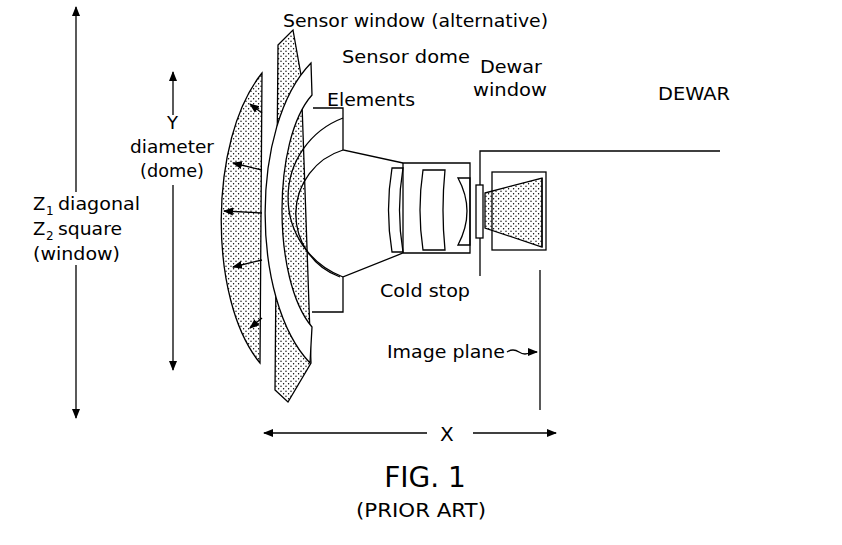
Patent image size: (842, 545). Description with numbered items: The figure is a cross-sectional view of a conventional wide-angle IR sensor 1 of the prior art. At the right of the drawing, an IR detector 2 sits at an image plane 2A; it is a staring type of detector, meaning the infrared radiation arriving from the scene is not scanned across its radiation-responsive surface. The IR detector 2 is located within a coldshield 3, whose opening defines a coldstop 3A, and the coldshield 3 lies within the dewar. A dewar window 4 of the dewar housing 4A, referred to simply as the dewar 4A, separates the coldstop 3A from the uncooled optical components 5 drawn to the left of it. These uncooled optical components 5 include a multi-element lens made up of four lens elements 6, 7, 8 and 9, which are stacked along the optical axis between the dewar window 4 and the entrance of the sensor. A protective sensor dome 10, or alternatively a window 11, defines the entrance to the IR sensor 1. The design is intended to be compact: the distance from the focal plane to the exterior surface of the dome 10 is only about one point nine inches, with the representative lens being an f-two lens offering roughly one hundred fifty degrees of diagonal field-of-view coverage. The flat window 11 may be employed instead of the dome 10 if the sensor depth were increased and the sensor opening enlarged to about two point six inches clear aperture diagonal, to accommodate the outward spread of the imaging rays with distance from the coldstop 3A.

The wide-angle IR sensor 1 is at (630, 131).
The IR detector 2 is at (546, 212).
The image plane 2A is at (540, 327).
The coldshield 3 is at (518, 171).
The coldstop 3A is at (481, 298).
The dewar window 4 is at (478, 167).
The dewar housing 4A is at (690, 150).
The uncooled optical components 5 is at (363, 278).
The lens element 6 is at (463, 177).
The lens element 7 is at (434, 169).
The lens element 8 is at (400, 167).
The lens element 9 is at (343, 133).
The sensor dome 10 is at (315, 76).
The window 11 is at (292, 47).